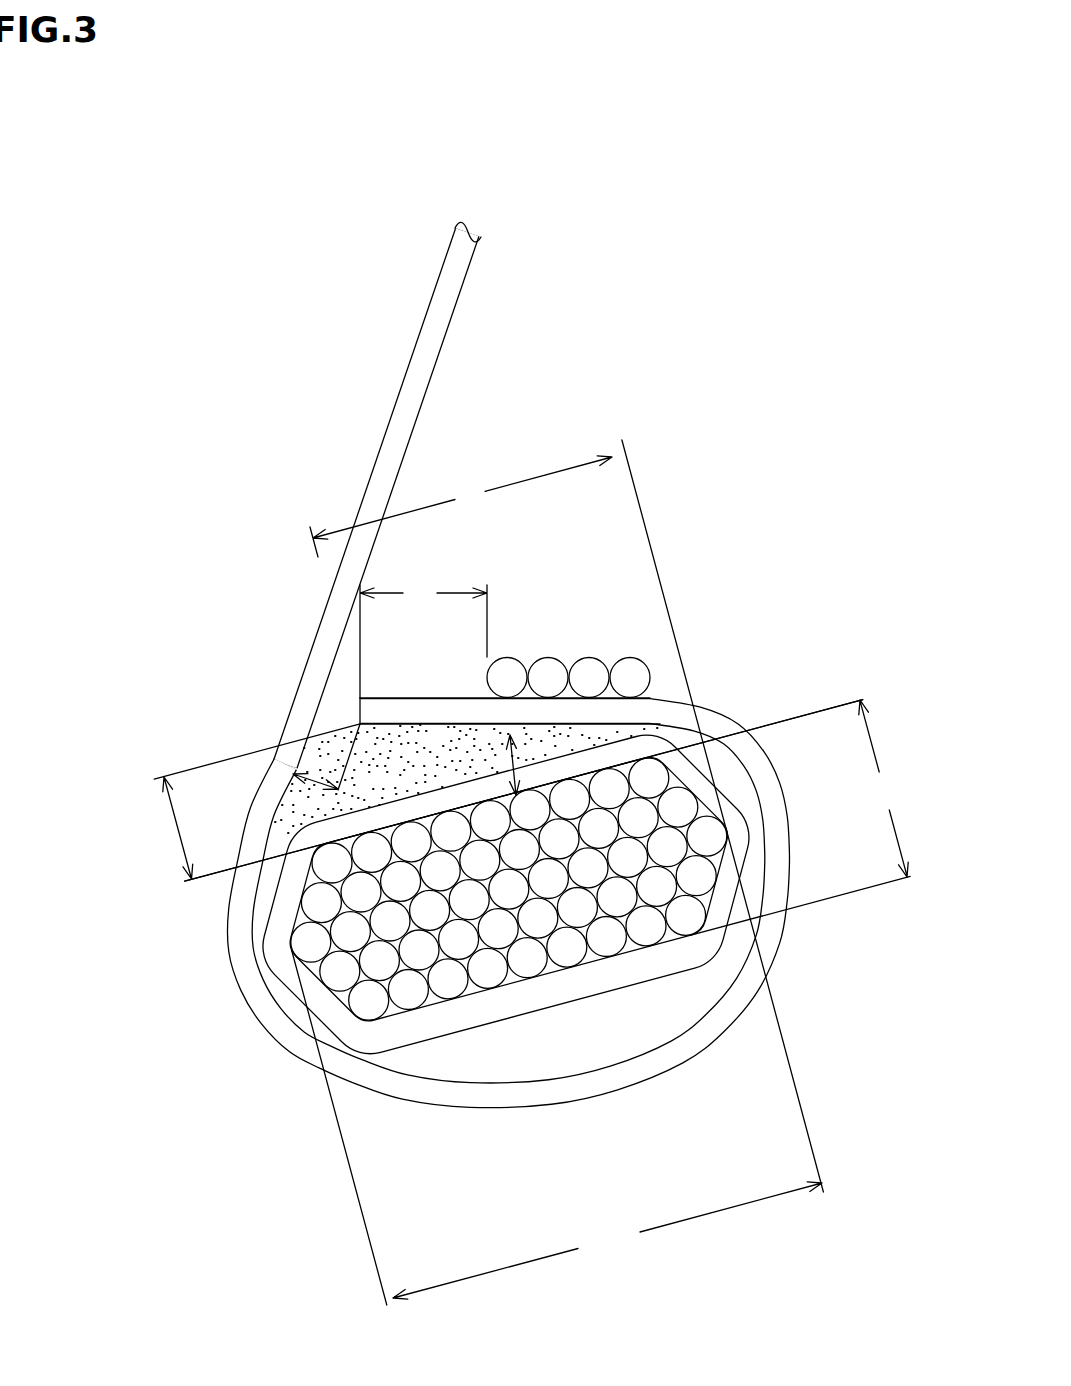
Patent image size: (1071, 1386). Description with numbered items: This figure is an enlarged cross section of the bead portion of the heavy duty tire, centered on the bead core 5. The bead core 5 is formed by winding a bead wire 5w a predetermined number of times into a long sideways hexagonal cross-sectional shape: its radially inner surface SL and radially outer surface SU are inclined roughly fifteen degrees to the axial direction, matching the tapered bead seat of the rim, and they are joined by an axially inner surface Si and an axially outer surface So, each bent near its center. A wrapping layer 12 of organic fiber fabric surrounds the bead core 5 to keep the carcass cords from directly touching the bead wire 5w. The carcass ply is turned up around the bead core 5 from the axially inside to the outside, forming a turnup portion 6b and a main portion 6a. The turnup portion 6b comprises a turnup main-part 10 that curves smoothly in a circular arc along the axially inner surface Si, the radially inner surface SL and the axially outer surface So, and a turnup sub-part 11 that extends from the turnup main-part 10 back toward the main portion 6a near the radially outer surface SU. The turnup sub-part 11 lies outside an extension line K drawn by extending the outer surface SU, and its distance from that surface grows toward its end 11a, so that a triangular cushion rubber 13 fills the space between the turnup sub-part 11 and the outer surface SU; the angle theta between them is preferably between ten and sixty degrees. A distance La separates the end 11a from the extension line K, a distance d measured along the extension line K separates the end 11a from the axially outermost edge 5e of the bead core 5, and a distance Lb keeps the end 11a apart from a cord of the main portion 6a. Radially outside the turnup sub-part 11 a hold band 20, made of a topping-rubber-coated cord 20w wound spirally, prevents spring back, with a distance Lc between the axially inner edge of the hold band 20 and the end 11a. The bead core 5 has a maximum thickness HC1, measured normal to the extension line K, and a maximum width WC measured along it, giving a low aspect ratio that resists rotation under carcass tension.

The main portion 6a is at (437, 313).
The turnup portion 6b is at (486, 1104).
The turnup main-part 10 is at (508, 699).
The turnup sub-part 11 is at (418, 627).
The end of the turnup sub-part 11a is at (346, 702).
The cushion rubber 13 is at (413, 770).
The cord 20w is at (632, 677).
The hold band 20 is at (633, 595).
The bead core 5 is at (509, 974).
The bead wire 5w is at (406, 1004).
The axially outermost edge of the bead core 5e is at (514, 911).
The wrapping layer 12 is at (478, 911).
The axially inner surface Si is at (343, 995).
The axially outer surface So is at (715, 898).
The radially outer surface SU is at (582, 777).
The radially inner surface SL is at (595, 965).
The extension line K is at (823, 705).
The maximum thickness HC1 is at (884, 788).
The maximum width WC is at (558, 872).
The distance d is at (461, 506).
The distance Lc is at (423, 638).
The distance La is at (247, 801).
The distance Lb is at (317, 779).